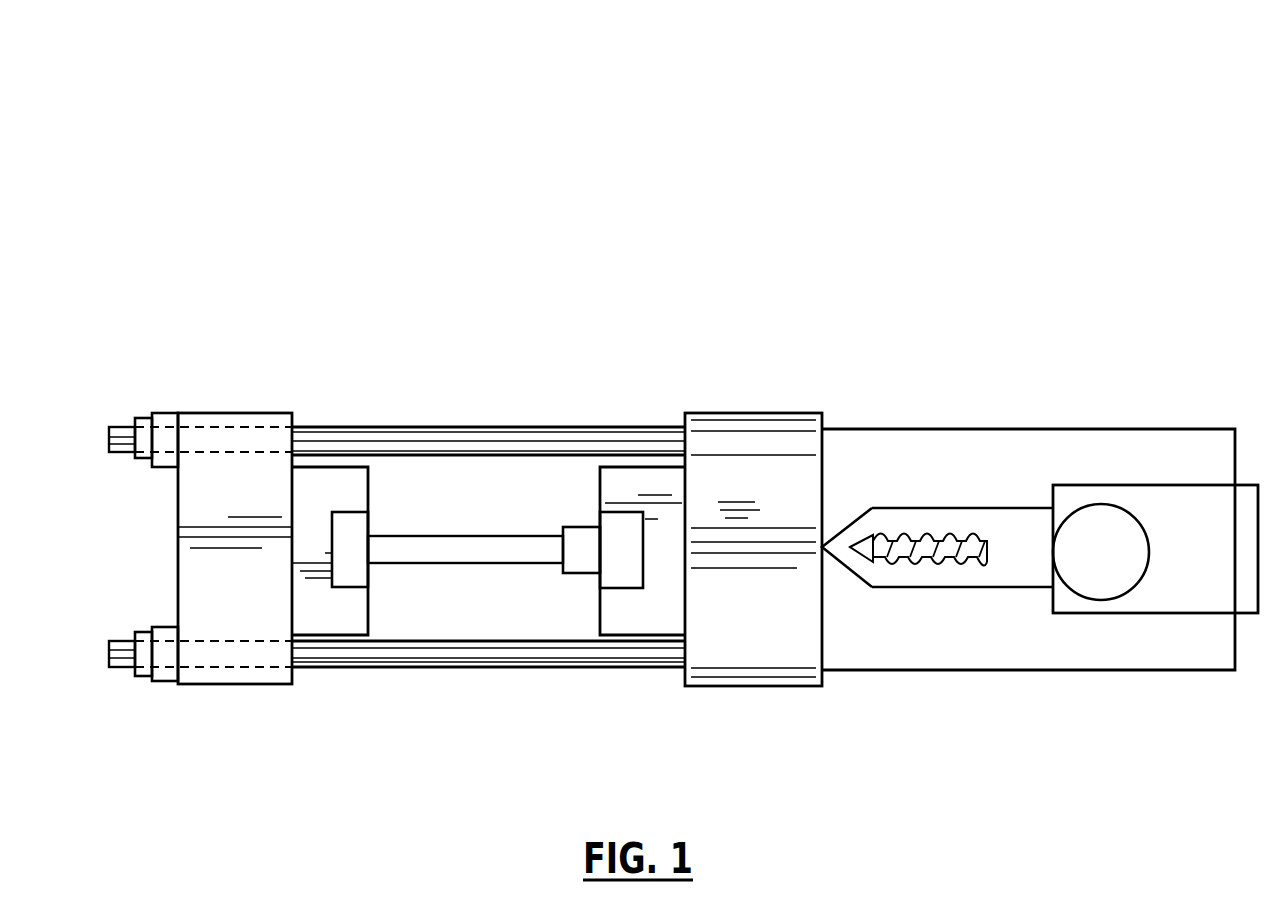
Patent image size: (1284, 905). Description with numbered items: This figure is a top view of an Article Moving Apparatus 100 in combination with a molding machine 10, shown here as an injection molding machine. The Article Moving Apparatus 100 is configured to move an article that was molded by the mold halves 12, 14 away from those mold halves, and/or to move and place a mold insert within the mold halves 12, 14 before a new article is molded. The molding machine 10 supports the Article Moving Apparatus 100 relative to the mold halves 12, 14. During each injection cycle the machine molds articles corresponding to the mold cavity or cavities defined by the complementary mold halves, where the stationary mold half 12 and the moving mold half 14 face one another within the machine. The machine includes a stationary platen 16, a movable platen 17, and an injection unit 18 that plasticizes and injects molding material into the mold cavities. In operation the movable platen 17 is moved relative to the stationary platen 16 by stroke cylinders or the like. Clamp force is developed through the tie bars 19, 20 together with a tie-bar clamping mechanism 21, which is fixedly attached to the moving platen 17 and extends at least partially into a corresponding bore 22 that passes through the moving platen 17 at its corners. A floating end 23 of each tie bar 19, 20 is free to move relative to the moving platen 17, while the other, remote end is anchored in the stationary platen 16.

The molding machine 10 is at (296, 185).
The stationary mold half 12 is at (618, 610).
The moving mold half 14 is at (335, 610).
The stationary platen 16 is at (742, 655).
The movable platen 17 is at (257, 423).
The injection unit 18 is at (983, 658).
The tie bar 19 is at (518, 658).
The tie bar 20 is at (413, 432).
The tie-bar clamping mechanism 21 is at (167, 422).
The bore 22 is at (215, 438).
The floating end 23 is at (120, 433).
The Article Moving Apparatus 100 is at (478, 542).